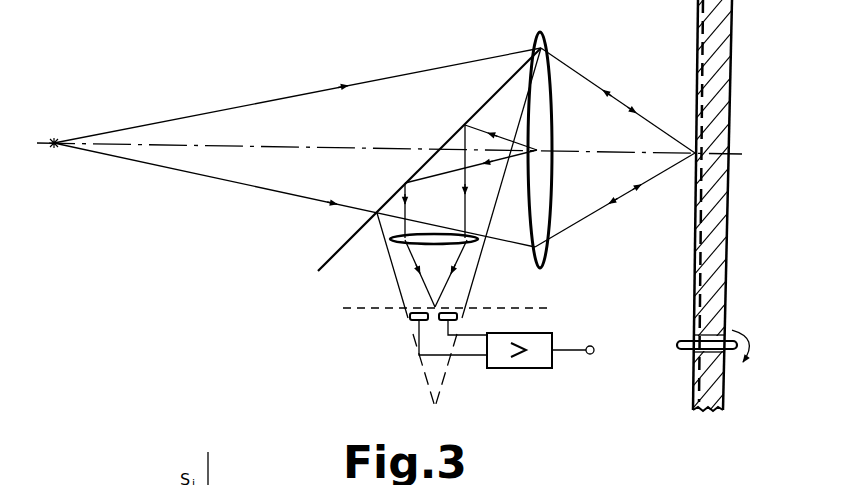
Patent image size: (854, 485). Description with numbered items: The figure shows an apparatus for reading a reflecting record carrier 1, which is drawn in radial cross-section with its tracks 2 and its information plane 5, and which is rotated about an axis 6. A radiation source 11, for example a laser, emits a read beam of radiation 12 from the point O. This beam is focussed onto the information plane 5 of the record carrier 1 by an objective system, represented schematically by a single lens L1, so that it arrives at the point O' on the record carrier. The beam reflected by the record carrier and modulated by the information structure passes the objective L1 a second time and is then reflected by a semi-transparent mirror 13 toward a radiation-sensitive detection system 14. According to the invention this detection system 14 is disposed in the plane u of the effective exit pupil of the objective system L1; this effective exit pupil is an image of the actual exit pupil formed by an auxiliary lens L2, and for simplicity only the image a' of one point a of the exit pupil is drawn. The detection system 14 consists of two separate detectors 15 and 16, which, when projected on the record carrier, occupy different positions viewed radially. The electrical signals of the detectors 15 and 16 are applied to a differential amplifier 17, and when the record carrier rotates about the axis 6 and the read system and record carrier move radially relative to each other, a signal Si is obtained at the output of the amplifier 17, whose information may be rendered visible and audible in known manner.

The record carrier 1 is at (712, 318).
The tracks 2 is at (703, 127).
The information plane 5 is at (700, 282).
The axis 6 is at (690, 339).
The radiation source 11 is at (54, 146).
The read beam of radiation 12 is at (267, 192).
The semi-transparent mirror 13 is at (325, 264).
The radiation-sensitive detection system 14 is at (409, 338).
The detector 15 is at (413, 322).
The detector 16 is at (457, 319).
The differential amplifier 17 is at (513, 368).
The objective system lens L1 is at (551, 111).
The auxiliary lens L2 is at (458, 244).
The point of the exit pupil a is at (554, 163).
The image of point a a' is at (439, 277).
The detection plane u is at (547, 308).
The object point (light source) O is at (44, 125).
The image point on drum surface O' is at (732, 154).
The output signal Si is at (590, 354).